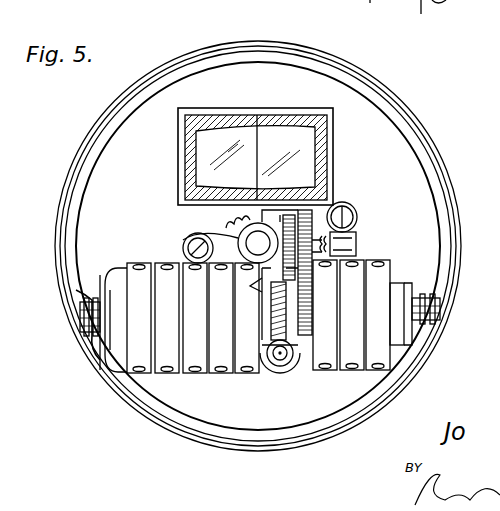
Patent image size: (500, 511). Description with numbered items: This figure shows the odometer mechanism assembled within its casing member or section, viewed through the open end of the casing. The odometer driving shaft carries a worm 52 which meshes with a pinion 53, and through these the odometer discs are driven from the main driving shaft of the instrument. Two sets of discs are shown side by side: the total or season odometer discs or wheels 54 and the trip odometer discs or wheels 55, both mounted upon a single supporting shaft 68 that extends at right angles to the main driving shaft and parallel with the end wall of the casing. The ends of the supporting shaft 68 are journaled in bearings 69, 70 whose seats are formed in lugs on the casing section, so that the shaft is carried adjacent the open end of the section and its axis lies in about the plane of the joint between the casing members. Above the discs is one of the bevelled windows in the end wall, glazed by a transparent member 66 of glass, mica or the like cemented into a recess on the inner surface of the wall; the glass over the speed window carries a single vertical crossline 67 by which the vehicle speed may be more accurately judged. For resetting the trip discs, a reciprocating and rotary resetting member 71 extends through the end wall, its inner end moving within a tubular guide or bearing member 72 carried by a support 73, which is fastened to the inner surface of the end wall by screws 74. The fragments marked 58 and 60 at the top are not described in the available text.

The worm 52 is at (288, 366).
The pinion 53 is at (270, 362).
The total or season odometer discs or wheels 54 is at (182, 331).
The trip odometer discs or wheels 55 is at (351, 328).
The casing part 58 is at (366, 13).
The casing stem 60 is at (431, 19).
The transparent members 66 is at (320, 163).
The vertical crossline 67 is at (252, 130).
The supporting shaft 68 is at (84, 322).
The bearing 69 is at (84, 294).
The bearing 70 is at (413, 332).
The resetting member 71 is at (238, 243).
The tubular guide or bearing member 72 is at (246, 243).
The support 73 is at (200, 238).
The screws 74 is at (184, 246).